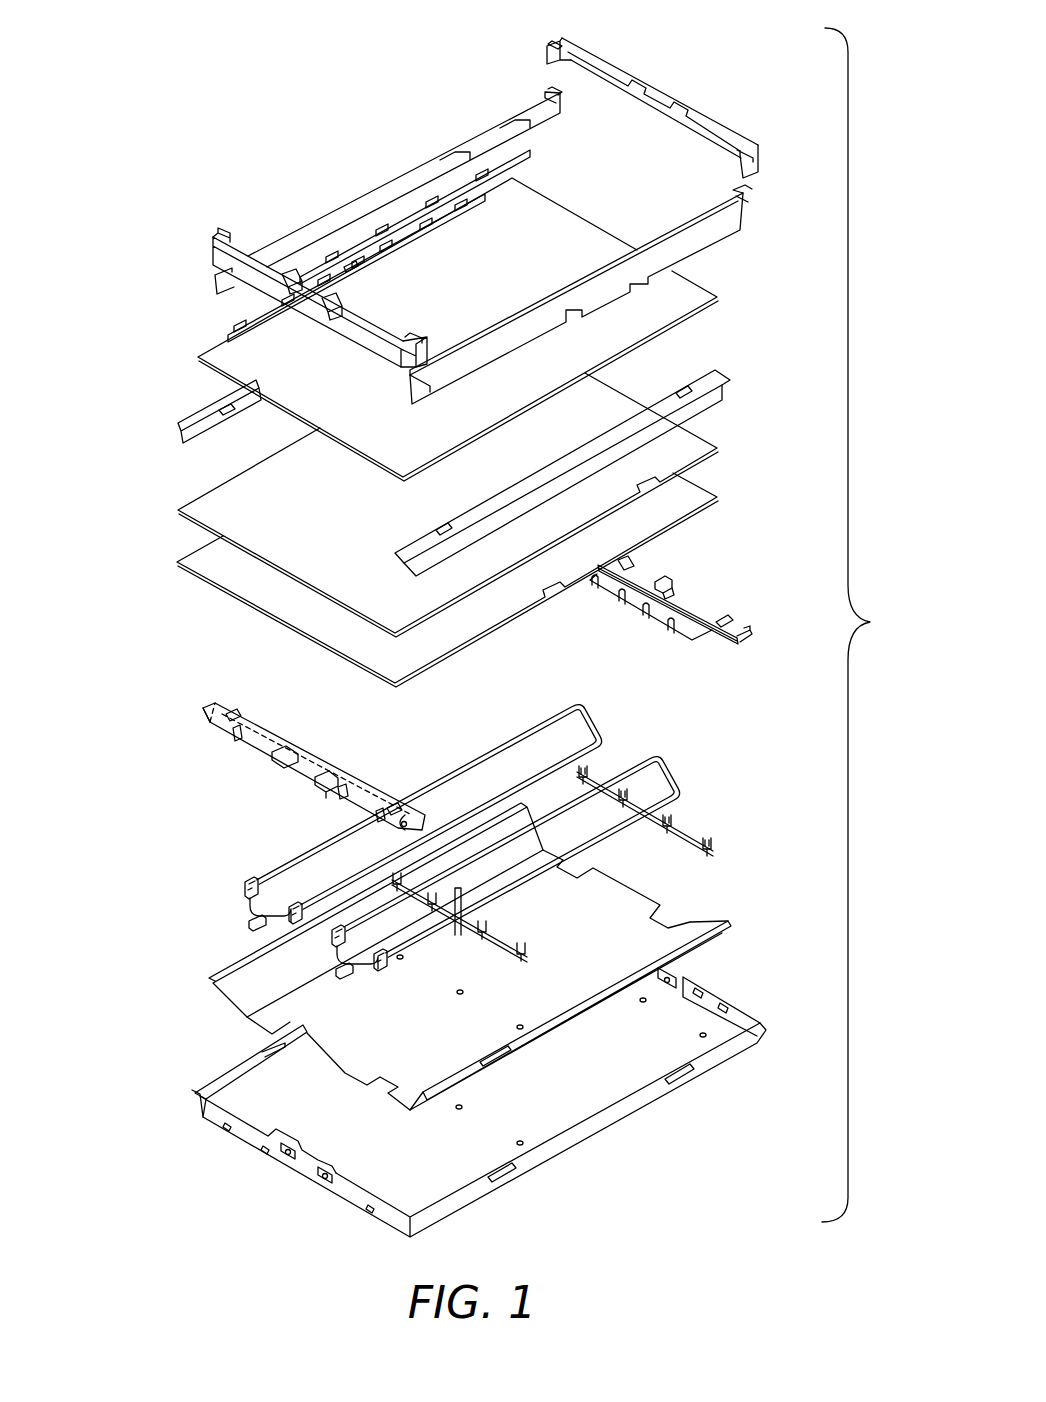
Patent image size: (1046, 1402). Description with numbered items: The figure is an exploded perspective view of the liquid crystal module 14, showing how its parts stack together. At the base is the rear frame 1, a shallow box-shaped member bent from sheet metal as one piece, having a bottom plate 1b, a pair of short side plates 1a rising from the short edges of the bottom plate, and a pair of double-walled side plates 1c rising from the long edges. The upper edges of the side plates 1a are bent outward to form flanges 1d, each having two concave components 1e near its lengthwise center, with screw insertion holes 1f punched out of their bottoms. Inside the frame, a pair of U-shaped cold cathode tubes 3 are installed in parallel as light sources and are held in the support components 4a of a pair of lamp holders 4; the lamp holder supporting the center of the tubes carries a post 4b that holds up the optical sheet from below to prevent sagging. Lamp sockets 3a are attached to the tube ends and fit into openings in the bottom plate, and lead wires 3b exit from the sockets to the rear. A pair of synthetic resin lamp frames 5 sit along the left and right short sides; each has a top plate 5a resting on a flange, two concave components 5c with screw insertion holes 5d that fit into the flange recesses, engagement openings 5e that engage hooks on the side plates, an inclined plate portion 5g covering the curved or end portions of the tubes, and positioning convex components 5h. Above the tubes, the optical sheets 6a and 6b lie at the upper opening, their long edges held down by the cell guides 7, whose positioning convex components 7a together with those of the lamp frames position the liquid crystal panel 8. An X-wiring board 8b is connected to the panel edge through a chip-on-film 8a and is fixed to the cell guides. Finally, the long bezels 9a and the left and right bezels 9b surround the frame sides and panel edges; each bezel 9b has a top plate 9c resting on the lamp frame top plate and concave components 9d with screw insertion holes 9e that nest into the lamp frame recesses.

The rear frame 1 is at (470, 989).
The short side plate 1a is at (352, 1196).
The bottom plate 1b is at (572, 1130).
The double-walled long side plate 1c is at (234, 1073).
The flange 1d is at (250, 1122).
The concave component 1e is at (678, 976).
The screw insertion hole 1f is at (316, 1172).
The U-shaped cold cathode tube 3 is at (516, 730).
The lamp socket 3a is at (296, 902).
The lead wire 3b is at (252, 922).
The lamp holder 4 is at (690, 836).
The support component 4a is at (705, 855).
The post 4b is at (458, 890).
The lamp frame 5 is at (522, 696).
The top plate 5a is at (740, 612).
The concave component 5c is at (662, 578).
The screw insertion hole 5d is at (673, 592).
The engagement opening 5e is at (238, 740).
The inclined plate portion 5g is at (694, 650).
The positioning convex component 5h is at (730, 622).
The optical sheet 6a is at (205, 558).
The optical sheet 6b is at (218, 497).
The cell guide 7 is at (202, 418).
The positioning convex component 7a is at (230, 414).
The liquid crystal panel 8 is at (548, 202).
The chip-on-film 8a is at (413, 228).
The X-wiring board 8b is at (350, 262).
The bezel 9a is at (420, 162).
The bezel 9b is at (485, 188).
The top plate 9c is at (592, 48).
The concave component 9d is at (685, 102).
The screw insertion hole 9e is at (336, 318).
The liquid crystal module 14 is at (864, 625).